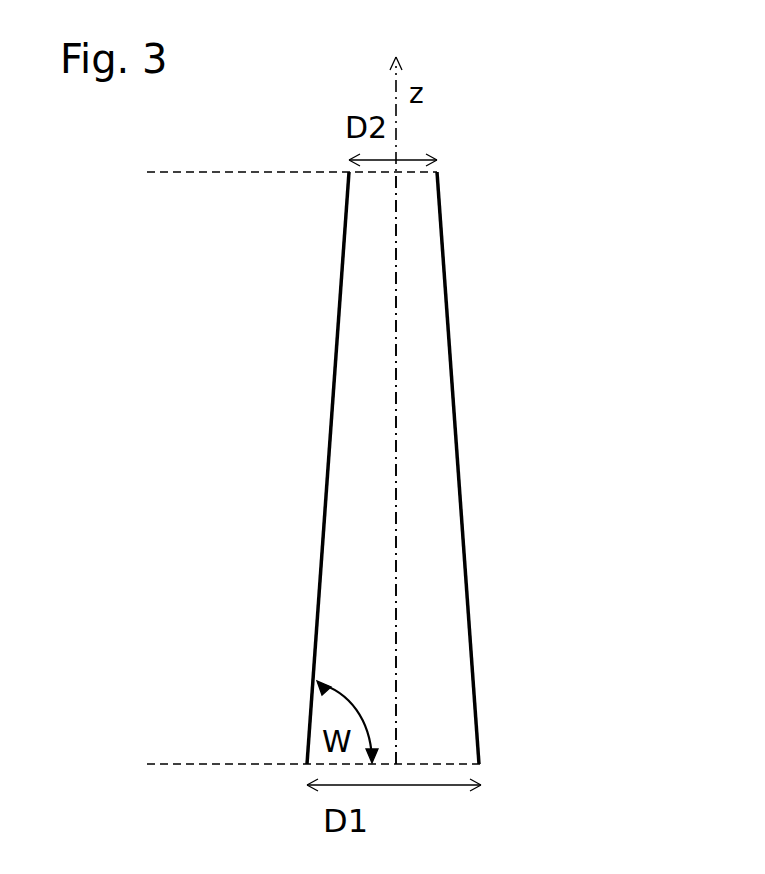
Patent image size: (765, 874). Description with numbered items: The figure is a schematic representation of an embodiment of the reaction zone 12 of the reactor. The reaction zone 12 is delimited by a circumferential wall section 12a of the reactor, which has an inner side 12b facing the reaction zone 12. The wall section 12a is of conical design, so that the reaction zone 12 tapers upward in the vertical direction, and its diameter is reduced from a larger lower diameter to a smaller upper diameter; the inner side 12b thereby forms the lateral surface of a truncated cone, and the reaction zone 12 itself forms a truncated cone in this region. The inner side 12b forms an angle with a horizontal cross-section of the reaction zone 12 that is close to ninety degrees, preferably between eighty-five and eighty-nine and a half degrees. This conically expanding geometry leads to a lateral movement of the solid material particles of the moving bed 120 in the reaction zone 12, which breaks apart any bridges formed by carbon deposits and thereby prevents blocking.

The reaction zone 12 is at (367, 468).
The circumferential wall section 12a is at (317, 592).
The inner side 12b is at (338, 382).
The moving bed 120 is at (428, 342).